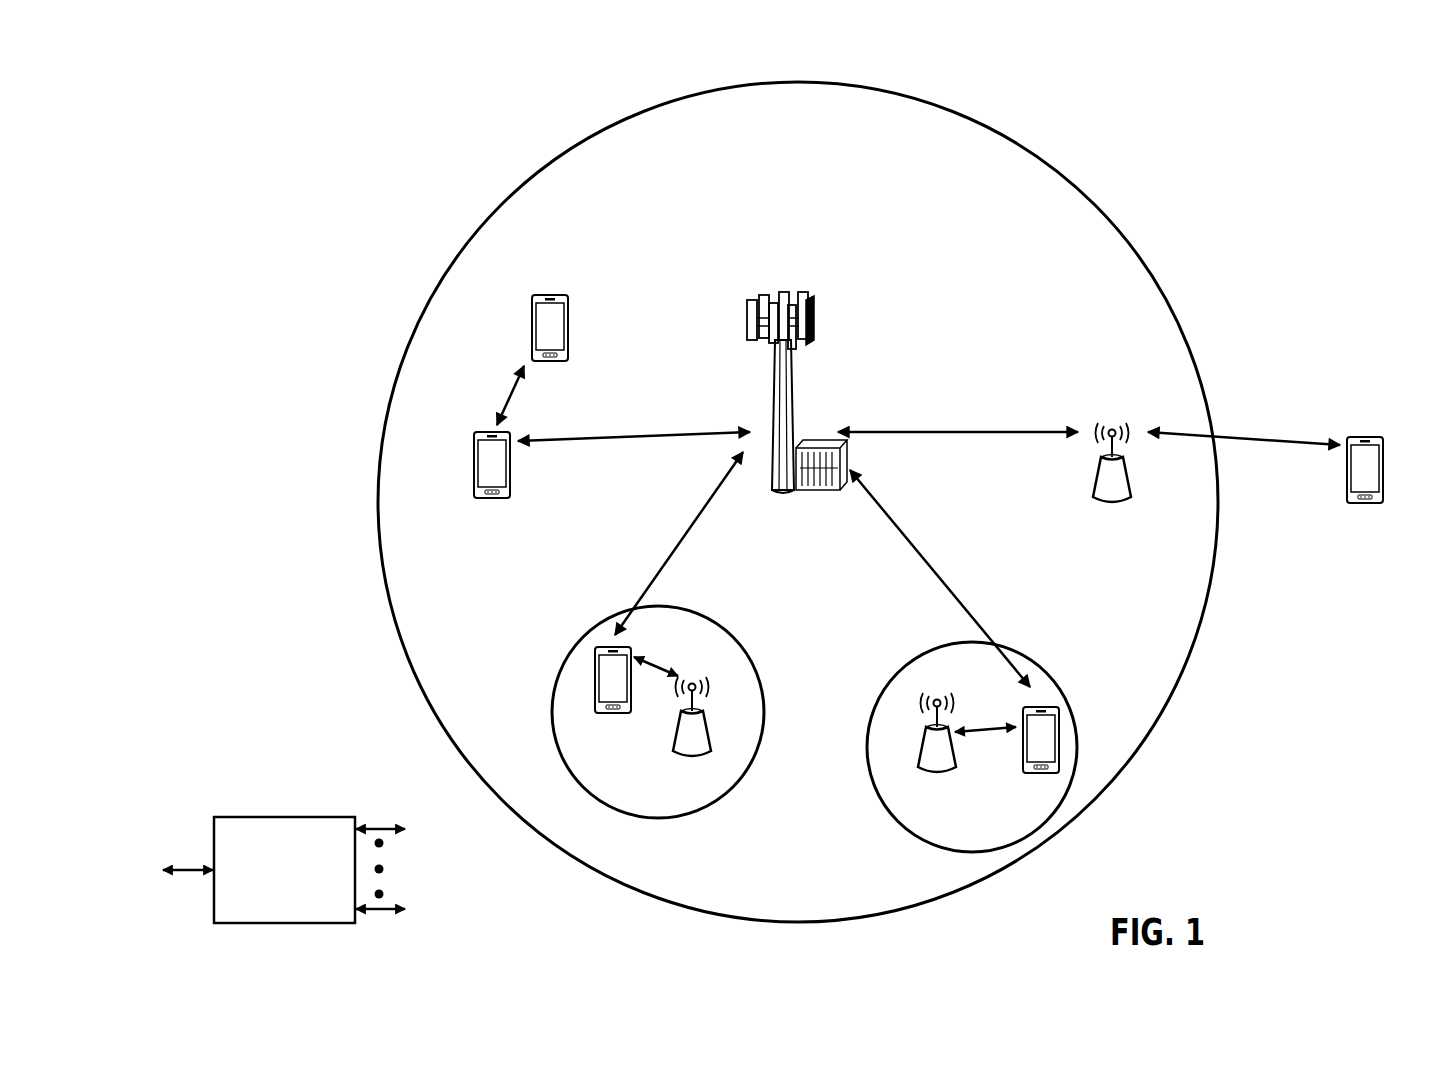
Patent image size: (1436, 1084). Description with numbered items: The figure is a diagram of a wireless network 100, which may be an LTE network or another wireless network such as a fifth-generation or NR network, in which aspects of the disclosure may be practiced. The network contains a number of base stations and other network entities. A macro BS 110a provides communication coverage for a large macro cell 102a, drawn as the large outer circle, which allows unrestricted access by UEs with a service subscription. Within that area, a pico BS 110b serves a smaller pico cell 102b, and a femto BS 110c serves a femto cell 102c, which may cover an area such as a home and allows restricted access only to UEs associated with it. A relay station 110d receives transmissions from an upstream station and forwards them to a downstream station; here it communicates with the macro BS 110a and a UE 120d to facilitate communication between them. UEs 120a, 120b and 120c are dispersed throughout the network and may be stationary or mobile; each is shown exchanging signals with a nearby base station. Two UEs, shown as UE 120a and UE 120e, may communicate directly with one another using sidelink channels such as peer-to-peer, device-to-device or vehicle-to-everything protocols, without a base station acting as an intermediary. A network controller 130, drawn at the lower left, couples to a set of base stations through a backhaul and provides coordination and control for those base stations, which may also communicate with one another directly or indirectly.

The wireless network 100 is at (264, 79).
The macro cell 102a is at (1076, 185).
The pico cell 102b is at (746, 653).
The femto cell 102c is at (908, 660).
The macro BS 110a is at (806, 285).
The pico BS 110b is at (710, 737).
The femto BS 110c is at (921, 756).
The relay station 110d is at (1112, 428).
The UE 120a is at (473, 462).
The UE 120b is at (597, 714).
The UE 120c is at (1024, 774).
The UE 120d is at (1373, 437).
The UE 120e is at (532, 313).
The network controller 130 is at (283, 815).